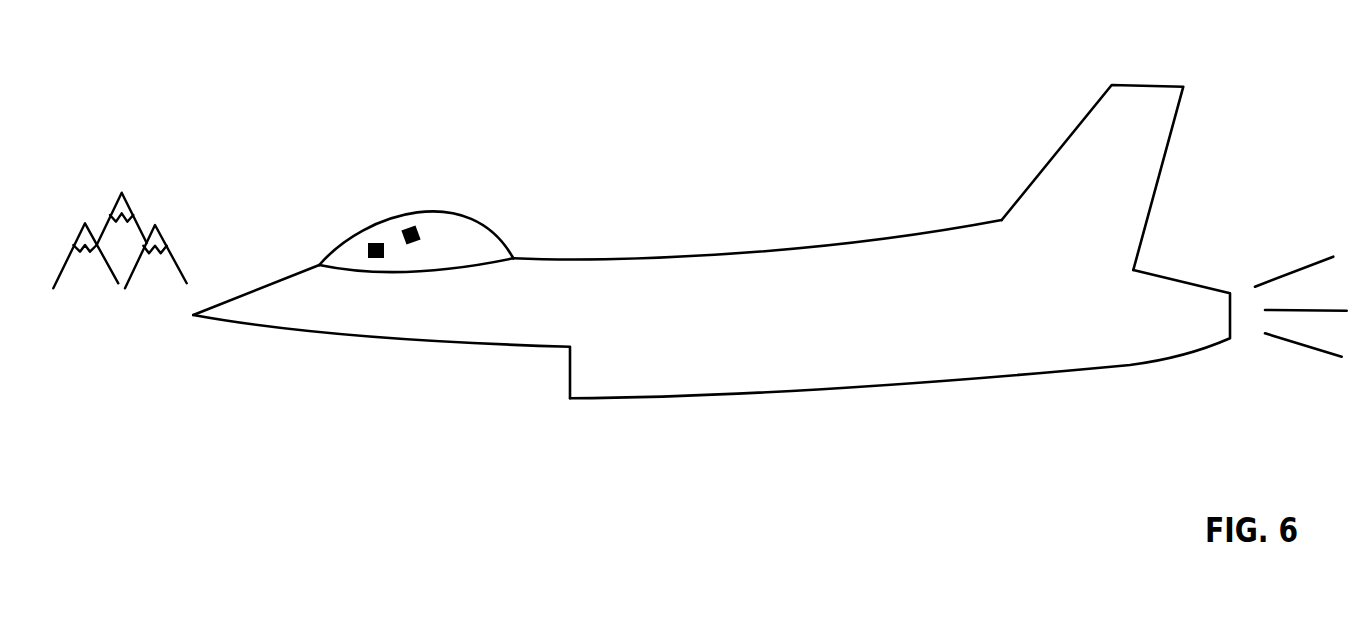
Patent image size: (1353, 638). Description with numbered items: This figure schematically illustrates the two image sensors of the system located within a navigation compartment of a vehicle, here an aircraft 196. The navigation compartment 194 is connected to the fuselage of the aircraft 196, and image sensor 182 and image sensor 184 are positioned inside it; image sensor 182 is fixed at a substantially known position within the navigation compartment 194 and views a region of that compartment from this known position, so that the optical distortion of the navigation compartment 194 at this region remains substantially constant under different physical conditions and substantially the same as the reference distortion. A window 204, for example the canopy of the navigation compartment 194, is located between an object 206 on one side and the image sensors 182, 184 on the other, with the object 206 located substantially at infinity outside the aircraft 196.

The image sensor 182 is at (372, 243).
The image sensor 184 is at (410, 225).
The navigation compartment 194 is at (458, 242).
The aircraft 196 is at (1162, 85).
The window 204 is at (348, 237).
The object 206 is at (115, 152).